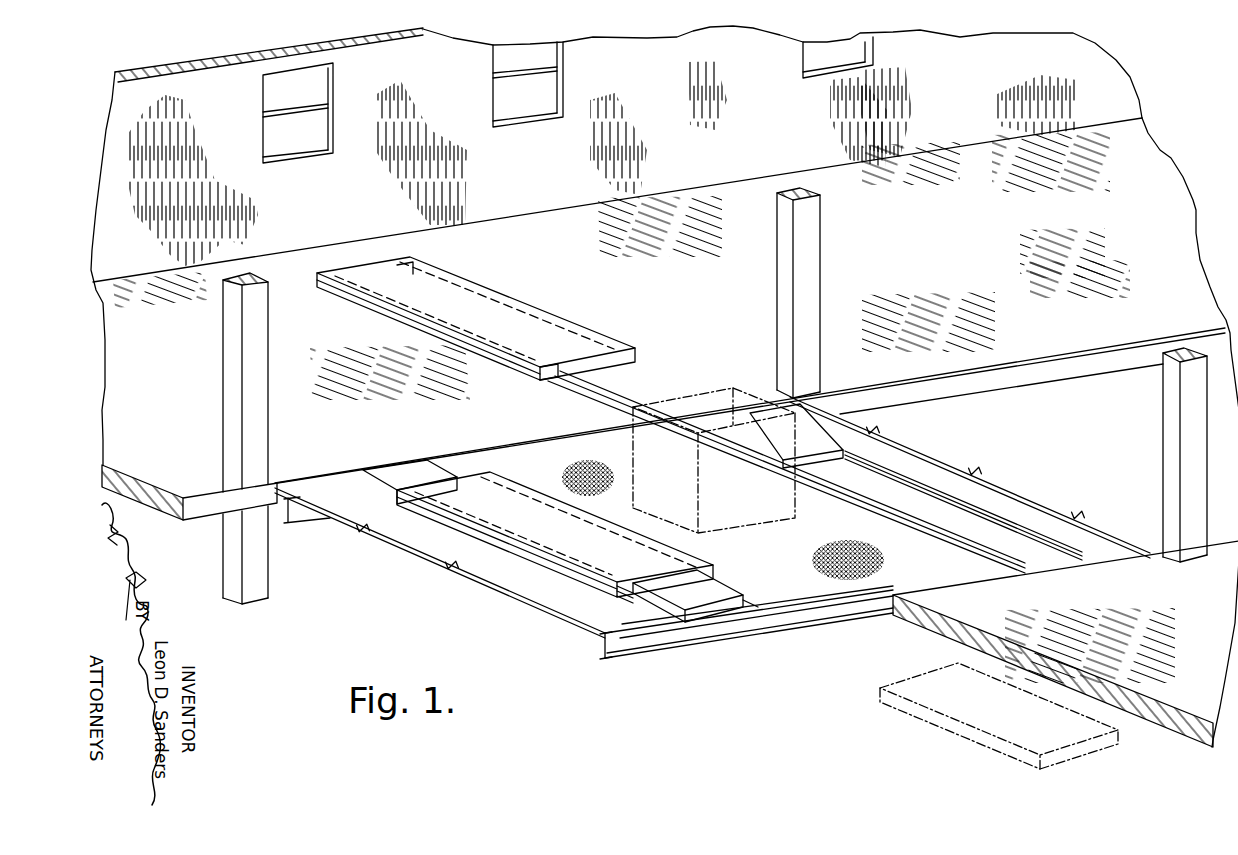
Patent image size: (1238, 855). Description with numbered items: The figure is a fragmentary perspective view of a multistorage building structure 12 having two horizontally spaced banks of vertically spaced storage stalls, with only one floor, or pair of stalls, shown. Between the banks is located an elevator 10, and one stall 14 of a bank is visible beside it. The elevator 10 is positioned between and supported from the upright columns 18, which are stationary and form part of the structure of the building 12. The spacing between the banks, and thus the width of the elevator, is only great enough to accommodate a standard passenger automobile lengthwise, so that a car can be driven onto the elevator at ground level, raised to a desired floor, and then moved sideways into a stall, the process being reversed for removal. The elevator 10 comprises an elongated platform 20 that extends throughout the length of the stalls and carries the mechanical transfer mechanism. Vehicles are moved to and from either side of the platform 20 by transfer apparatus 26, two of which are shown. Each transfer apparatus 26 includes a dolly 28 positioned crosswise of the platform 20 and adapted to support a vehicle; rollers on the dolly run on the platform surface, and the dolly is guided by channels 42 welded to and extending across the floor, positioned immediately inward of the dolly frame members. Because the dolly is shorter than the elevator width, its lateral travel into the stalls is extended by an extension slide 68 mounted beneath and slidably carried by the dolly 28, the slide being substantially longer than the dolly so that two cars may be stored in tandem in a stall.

The elevator 10 is at (1017, 476).
The multistorage building structure 12 is at (1016, 82).
The stall 14 is at (1171, 158).
The upright columns 18 is at (223, 333).
The elongated platform 20 is at (515, 596).
The transfer apparatus 26 is at (852, 508).
The dolly 28 is at (508, 297).
The channels 42 is at (1000, 531).
The extension slide 68 is at (440, 466).